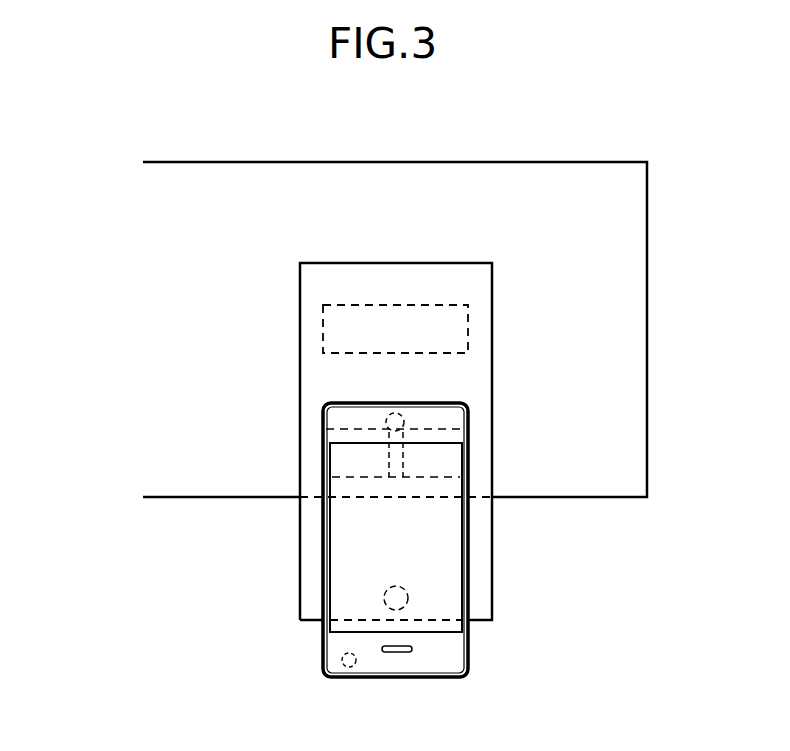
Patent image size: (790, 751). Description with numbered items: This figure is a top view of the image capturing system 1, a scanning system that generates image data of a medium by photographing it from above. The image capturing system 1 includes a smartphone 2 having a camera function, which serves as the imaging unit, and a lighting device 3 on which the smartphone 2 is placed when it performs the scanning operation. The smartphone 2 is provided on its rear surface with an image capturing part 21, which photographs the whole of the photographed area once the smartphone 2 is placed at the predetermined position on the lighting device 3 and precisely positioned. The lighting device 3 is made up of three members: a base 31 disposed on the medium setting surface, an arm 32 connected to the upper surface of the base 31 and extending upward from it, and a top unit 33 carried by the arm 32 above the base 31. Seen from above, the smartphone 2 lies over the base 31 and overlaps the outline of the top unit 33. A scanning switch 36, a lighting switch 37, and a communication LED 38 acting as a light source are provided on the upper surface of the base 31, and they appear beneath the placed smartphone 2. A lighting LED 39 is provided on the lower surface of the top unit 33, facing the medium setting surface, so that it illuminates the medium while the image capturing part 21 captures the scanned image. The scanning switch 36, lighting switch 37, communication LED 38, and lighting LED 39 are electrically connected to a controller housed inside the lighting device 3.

The image capturing system 1 is at (52, 123).
The smartphone 2 is at (434, 660).
The lighting device 3 is at (648, 268).
The image capturing part 21 is at (349, 668).
The base 31 is at (226, 178).
The arm 32 is at (407, 305).
The top unit 33 is at (492, 366).
The scanning switch 36 is at (342, 426).
The lighting switch 37 is at (432, 426).
The communication LED 38 is at (396, 413).
The lighting LED 39 is at (396, 586).